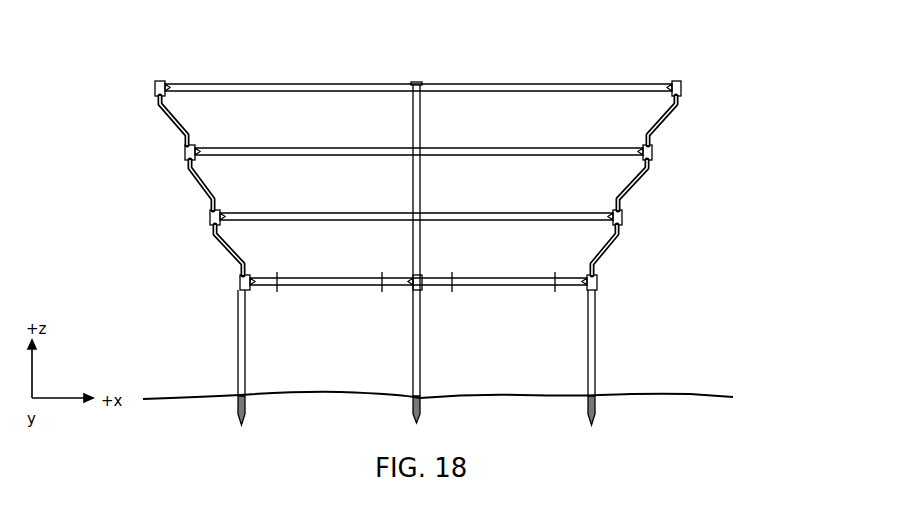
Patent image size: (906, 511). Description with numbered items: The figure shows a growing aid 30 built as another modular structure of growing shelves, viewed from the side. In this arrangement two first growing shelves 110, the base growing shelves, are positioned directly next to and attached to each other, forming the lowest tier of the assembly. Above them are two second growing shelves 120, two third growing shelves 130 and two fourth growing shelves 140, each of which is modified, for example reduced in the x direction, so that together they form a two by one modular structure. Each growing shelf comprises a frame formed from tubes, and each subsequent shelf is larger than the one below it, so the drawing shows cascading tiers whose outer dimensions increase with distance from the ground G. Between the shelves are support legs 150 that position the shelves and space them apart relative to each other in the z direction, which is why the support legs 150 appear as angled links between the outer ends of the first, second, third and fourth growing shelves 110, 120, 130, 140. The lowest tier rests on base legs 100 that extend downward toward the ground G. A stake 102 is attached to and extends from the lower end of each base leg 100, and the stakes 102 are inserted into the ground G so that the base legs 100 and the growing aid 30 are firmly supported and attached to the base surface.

The growing aid 30 is at (707, 59).
The fourth growing shelf 140 is at (127, 78).
The third growing shelf 130 is at (156, 146).
The second growing shelf 120 is at (185, 212).
The first growing shelf 110 is at (205, 277).
The support legs 150 is at (672, 122).
The base legs 100 is at (246, 346).
The stake 102 is at (246, 423).
The ground G is at (722, 393).